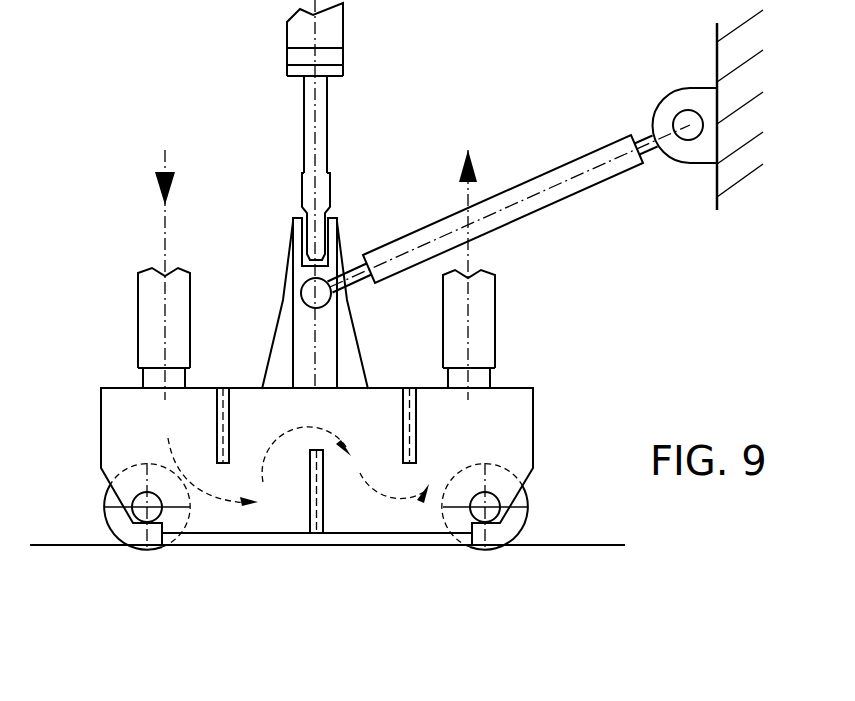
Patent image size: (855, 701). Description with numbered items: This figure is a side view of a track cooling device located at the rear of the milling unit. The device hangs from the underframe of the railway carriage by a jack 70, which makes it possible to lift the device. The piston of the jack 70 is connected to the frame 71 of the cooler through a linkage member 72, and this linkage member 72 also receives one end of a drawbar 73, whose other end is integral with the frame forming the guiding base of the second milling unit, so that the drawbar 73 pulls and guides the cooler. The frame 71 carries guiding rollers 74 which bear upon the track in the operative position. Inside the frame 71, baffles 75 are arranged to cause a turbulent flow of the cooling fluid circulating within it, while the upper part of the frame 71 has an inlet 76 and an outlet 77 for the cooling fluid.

The jack 70 is at (312, 117).
The frame 71 is at (503, 423).
The linkage member 72 is at (307, 340).
The drawbar 73 is at (564, 165).
The guiding rollers 74 is at (125, 523).
The baffles 75 is at (221, 386).
The inlet 76 is at (150, 313).
The outlet 77 is at (480, 303).